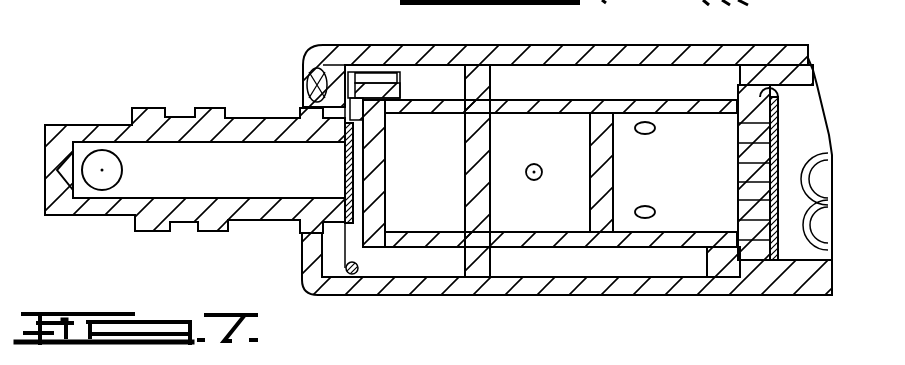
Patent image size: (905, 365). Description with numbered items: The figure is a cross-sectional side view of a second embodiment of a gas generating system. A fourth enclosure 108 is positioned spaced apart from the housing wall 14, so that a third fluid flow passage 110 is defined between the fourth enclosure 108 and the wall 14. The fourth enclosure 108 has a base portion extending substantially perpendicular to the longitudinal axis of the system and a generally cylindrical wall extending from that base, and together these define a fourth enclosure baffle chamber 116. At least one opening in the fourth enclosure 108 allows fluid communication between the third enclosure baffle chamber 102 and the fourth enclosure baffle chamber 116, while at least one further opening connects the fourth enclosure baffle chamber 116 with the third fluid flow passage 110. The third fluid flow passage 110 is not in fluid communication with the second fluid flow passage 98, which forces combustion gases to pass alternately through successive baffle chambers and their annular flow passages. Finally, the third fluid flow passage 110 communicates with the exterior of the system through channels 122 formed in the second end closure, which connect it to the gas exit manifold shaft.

The housing wall 14 is at (470, 68).
The second fluid flow passage 98 is at (513, 262).
The third enclosure baffle chamber 102 is at (552, 133).
The fourth enclosure 108 is at (459, 69).
The third fluid flow passage 110 is at (450, 262).
The fourth enclosure baffle chamber 116 is at (415, 195).
The channels 122 is at (311, 68).